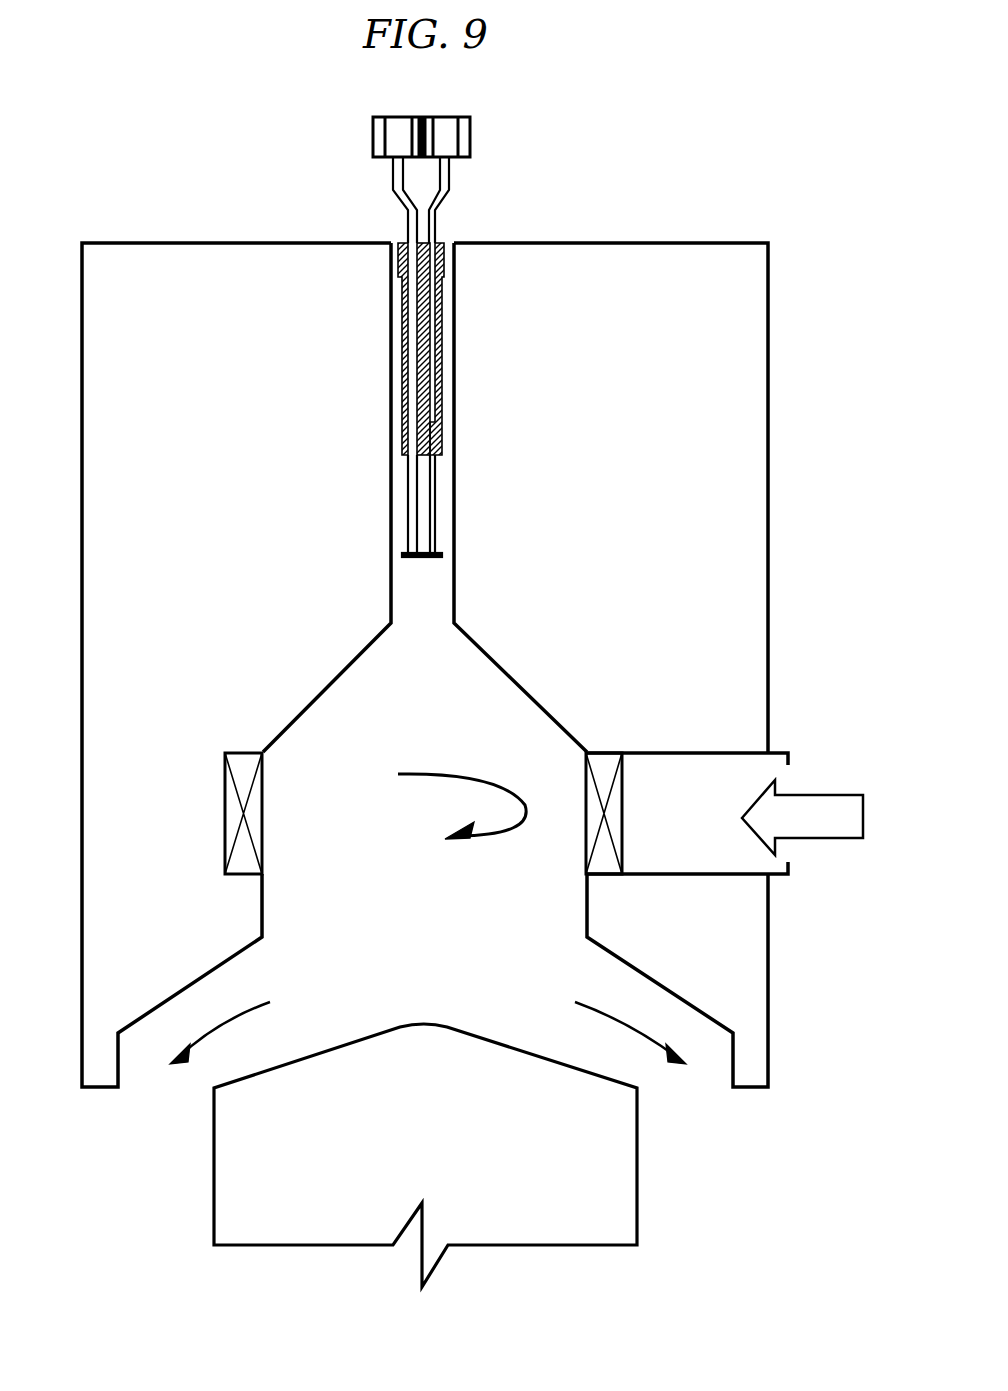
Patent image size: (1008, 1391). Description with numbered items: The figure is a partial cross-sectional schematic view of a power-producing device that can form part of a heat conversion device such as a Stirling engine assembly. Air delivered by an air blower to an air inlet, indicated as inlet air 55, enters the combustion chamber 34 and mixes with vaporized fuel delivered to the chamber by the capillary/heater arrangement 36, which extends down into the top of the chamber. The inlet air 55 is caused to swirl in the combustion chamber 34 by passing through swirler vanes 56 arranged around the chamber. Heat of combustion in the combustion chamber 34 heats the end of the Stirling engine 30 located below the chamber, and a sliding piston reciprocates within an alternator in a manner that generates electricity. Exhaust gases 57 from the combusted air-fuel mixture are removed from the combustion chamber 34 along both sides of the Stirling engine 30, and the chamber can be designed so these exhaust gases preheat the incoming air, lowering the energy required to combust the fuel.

The Stirling engine 30 is at (425, 1155).
The combustion chamber 34 is at (462, 771).
The capillary/heater arrangement 36 is at (435, 665).
The inlet air 55 is at (802, 817).
The swirler vanes 56 is at (264, 838).
The exhaust gases 57 is at (428, 1019).